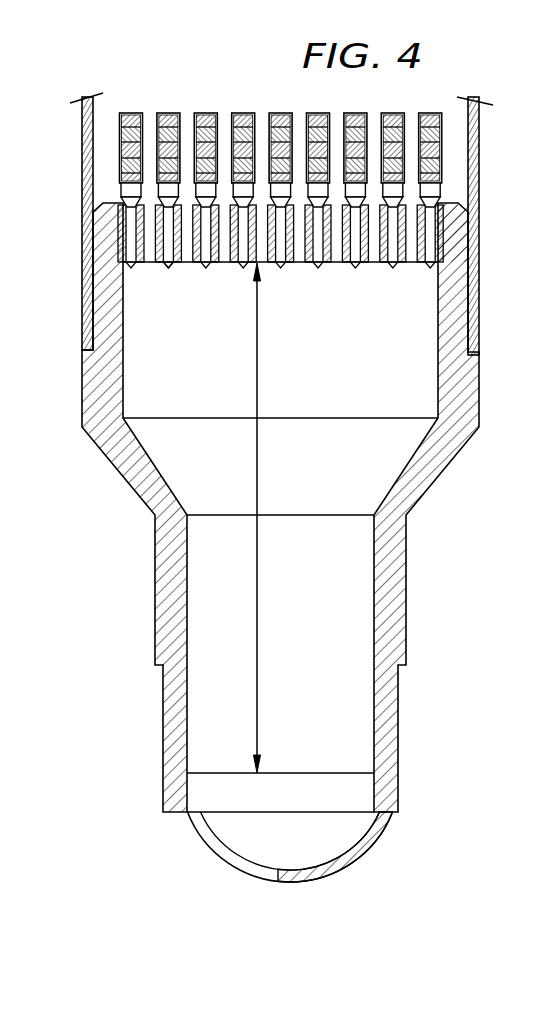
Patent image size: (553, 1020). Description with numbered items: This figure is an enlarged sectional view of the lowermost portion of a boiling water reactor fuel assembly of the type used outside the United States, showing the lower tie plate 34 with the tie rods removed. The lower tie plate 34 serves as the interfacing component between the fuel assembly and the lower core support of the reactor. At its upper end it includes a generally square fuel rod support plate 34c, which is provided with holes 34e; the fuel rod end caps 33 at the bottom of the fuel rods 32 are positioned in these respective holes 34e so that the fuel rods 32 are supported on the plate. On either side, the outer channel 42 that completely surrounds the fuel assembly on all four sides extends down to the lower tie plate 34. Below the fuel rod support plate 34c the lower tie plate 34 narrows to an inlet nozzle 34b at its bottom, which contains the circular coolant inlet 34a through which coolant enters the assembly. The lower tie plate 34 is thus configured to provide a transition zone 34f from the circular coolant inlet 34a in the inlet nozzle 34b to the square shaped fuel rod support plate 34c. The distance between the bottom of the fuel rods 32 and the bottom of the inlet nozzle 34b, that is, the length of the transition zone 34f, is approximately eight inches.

The fuel rods 32 is at (120, 152).
The fuel rod end caps 33 is at (131, 233).
The lower tie plate 34 is at (457, 315).
The circular coolant inlet 34a is at (372, 791).
The inlet nozzle 34b is at (385, 815).
The fuel rod support plate 34c is at (232, 216).
The holes 34e is at (173, 232).
The transition zone 34f is at (258, 393).
The outer channel 42 is at (83, 131).